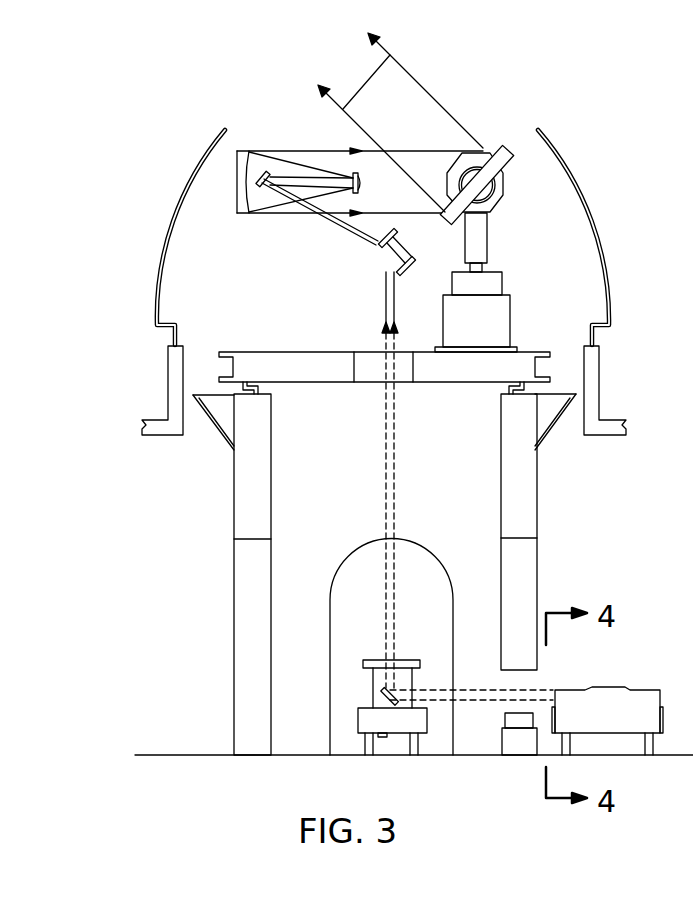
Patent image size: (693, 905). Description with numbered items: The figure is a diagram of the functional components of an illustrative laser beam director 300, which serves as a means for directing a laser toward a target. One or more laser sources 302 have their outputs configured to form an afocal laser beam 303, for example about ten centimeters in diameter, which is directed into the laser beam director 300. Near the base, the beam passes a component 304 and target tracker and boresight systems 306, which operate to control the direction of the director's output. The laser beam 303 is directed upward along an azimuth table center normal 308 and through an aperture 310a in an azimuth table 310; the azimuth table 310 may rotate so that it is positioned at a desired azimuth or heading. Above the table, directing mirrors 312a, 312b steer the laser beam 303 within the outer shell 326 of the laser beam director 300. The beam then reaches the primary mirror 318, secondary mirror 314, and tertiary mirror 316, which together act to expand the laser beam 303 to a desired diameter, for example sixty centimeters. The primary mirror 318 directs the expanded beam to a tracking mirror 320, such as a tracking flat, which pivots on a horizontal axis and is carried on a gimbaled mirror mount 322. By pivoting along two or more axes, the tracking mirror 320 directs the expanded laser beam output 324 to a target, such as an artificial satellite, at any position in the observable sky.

The laser beam director 300 is at (145, 588).
The laser source 302 is at (634, 725).
The laser beam 303 is at (535, 690).
The beam conditioning unit 304 is at (477, 702).
The target tracker and boresight systems 306 is at (370, 693).
The azimuth table center normal 308 is at (384, 451).
The azimuth table 310 is at (252, 362).
The aperture 310a is at (371, 376).
The directing mirror 312a is at (395, 278).
The directing mirror 312b is at (378, 247).
The secondary mirror 314 is at (360, 184).
The tertiary mirror 316 is at (260, 188).
The primary mirror 318 is at (237, 190).
The tracking mirror 320 is at (498, 147).
The gimbaled mirror mount 322 is at (503, 309).
The expanded laser beam output 324 is at (368, 83).
The outer shell 326 is at (157, 292).